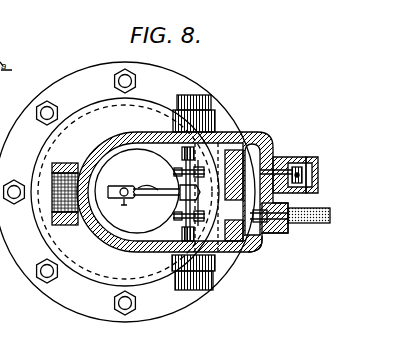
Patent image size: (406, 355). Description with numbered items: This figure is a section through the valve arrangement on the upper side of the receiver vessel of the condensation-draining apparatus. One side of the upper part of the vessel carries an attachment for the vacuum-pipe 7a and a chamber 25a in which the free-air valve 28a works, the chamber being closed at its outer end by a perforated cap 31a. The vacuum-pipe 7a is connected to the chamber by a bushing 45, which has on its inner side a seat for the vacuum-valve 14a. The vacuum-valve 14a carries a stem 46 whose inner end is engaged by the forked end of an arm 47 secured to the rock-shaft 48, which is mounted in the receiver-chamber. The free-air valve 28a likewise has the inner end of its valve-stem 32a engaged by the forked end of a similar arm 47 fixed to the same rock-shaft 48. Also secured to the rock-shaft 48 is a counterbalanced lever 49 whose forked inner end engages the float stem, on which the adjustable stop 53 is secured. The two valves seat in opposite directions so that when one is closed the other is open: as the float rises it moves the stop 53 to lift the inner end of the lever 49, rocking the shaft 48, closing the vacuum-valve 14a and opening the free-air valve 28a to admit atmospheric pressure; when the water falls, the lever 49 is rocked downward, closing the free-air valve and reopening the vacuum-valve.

The valve-stem 32a is at (255, 140).
The chamber 25a is at (293, 157).
The perforated cap 31a is at (316, 158).
The free-air valve 28a is at (311, 178).
The vacuum-pipe 7a is at (316, 224).
The bushing 45 is at (283, 234).
The vacuum-valve 14a is at (253, 256).
The stem 46 is at (203, 264).
The arm 47 is at (183, 168).
The rock-shaft 48 is at (180, 205).
The counterbalanced lever 49 is at (145, 190).
The adjustable stop 53 is at (140, 193).